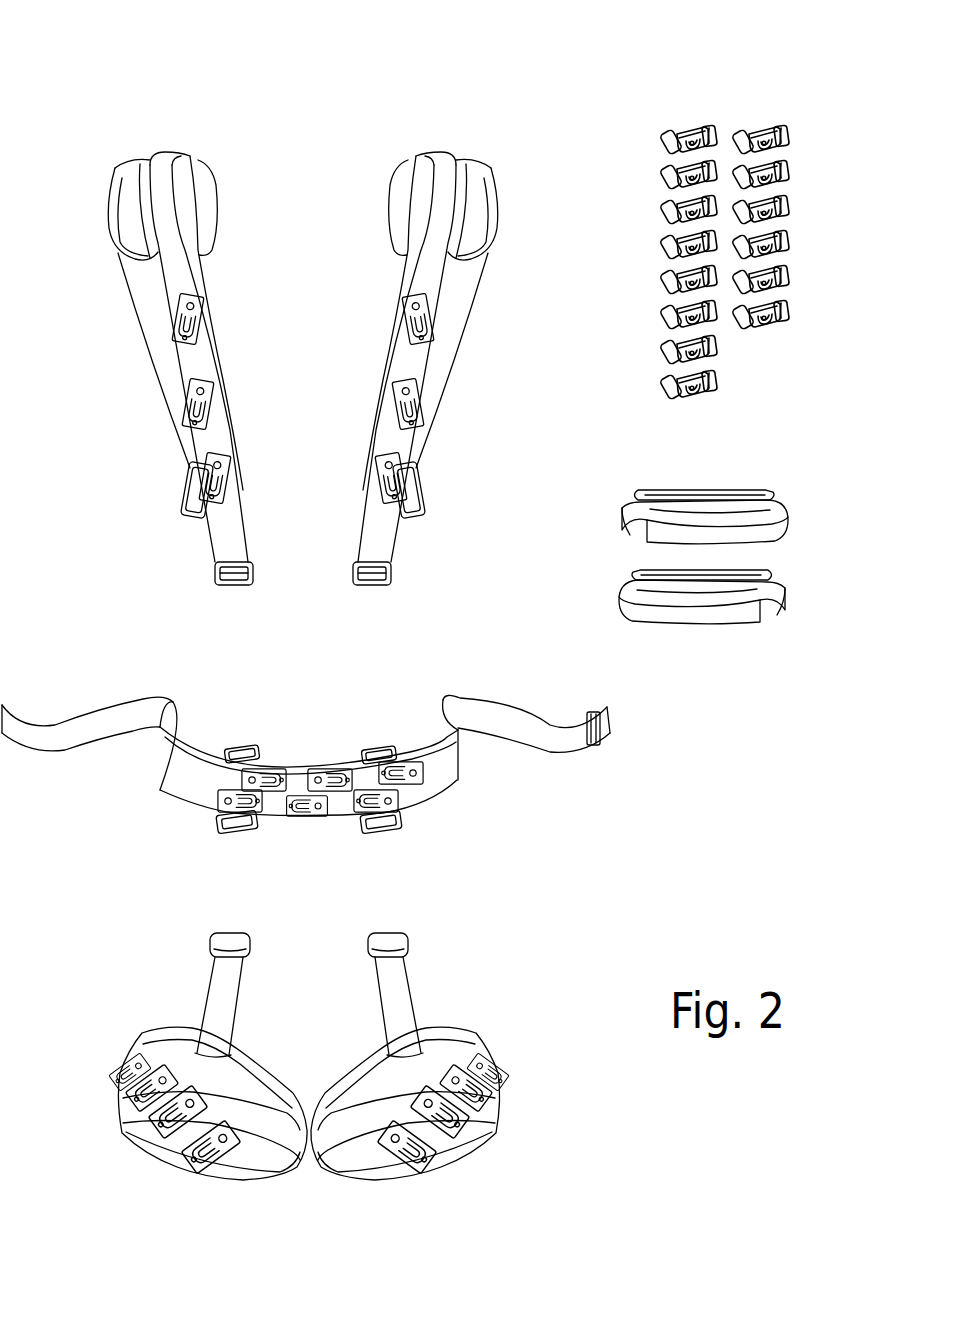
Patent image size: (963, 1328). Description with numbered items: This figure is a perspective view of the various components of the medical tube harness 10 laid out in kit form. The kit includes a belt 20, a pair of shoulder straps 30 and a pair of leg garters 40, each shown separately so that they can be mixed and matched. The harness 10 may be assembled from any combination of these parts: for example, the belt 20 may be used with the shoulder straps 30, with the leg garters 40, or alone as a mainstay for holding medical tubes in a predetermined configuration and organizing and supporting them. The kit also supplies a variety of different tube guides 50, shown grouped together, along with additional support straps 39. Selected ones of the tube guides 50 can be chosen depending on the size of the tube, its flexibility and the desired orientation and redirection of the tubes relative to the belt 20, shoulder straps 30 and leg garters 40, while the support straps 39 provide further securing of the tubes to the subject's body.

The medical tube harness 10 is at (200, 96).
The belt 20 is at (600, 843).
The shoulder straps 30 is at (138, 602).
The additional support straps 39 is at (797, 482).
The leg garters 40 is at (497, 1190).
The tube guides 50 is at (793, 125).